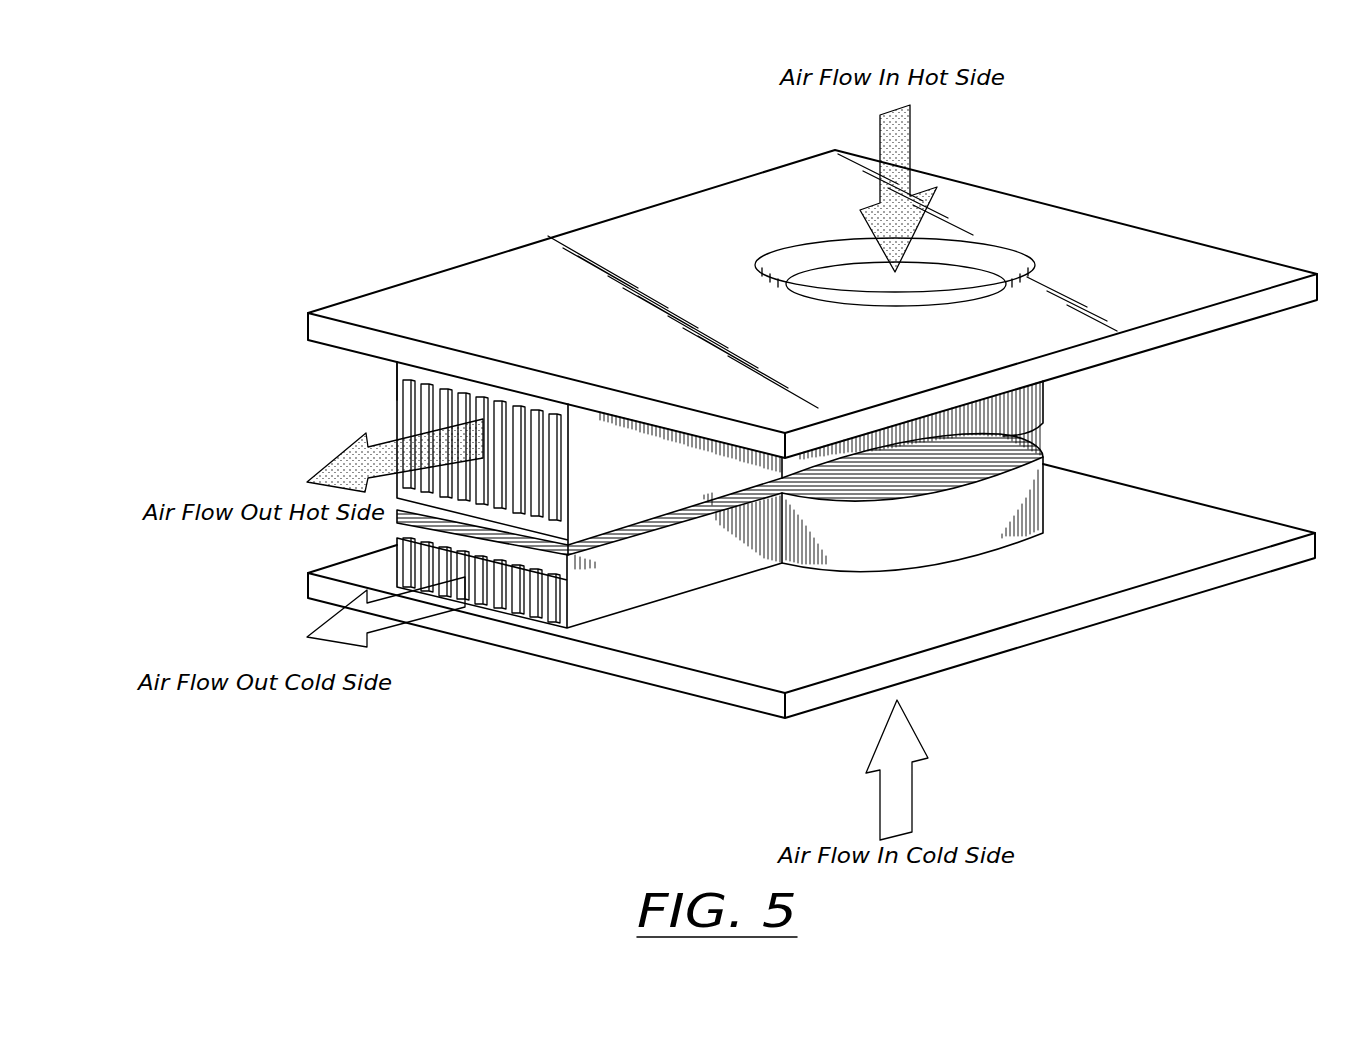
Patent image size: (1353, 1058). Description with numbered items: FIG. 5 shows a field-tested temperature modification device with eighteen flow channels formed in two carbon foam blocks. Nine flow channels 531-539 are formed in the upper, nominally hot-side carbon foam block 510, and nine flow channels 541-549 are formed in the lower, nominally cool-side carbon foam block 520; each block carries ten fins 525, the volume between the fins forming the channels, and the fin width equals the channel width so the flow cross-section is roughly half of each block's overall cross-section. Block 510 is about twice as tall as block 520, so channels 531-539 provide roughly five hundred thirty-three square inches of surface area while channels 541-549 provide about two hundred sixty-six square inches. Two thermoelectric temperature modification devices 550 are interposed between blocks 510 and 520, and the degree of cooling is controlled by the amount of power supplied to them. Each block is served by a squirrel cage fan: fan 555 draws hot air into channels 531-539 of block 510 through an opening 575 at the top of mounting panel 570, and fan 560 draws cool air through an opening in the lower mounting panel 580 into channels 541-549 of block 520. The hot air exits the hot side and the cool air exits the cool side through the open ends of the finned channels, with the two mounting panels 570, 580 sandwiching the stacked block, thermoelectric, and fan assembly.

The carbon foam block 510 is at (590, 422).
The carbon foam block 520 is at (600, 612).
The fins 525 is at (412, 380).
The flow channels 531-539 is at (586, 426).
The flow channels 541-549 is at (591, 578).
The thermoelectric temperature modification devices 550 is at (588, 547).
The squirrel cage fan 555 is at (1022, 424).
The squirrel cage fan 560 is at (993, 512).
The mounting panel 570 is at (1132, 252).
The opening 575 is at (967, 283).
The mounting panel 580 is at (1118, 605).